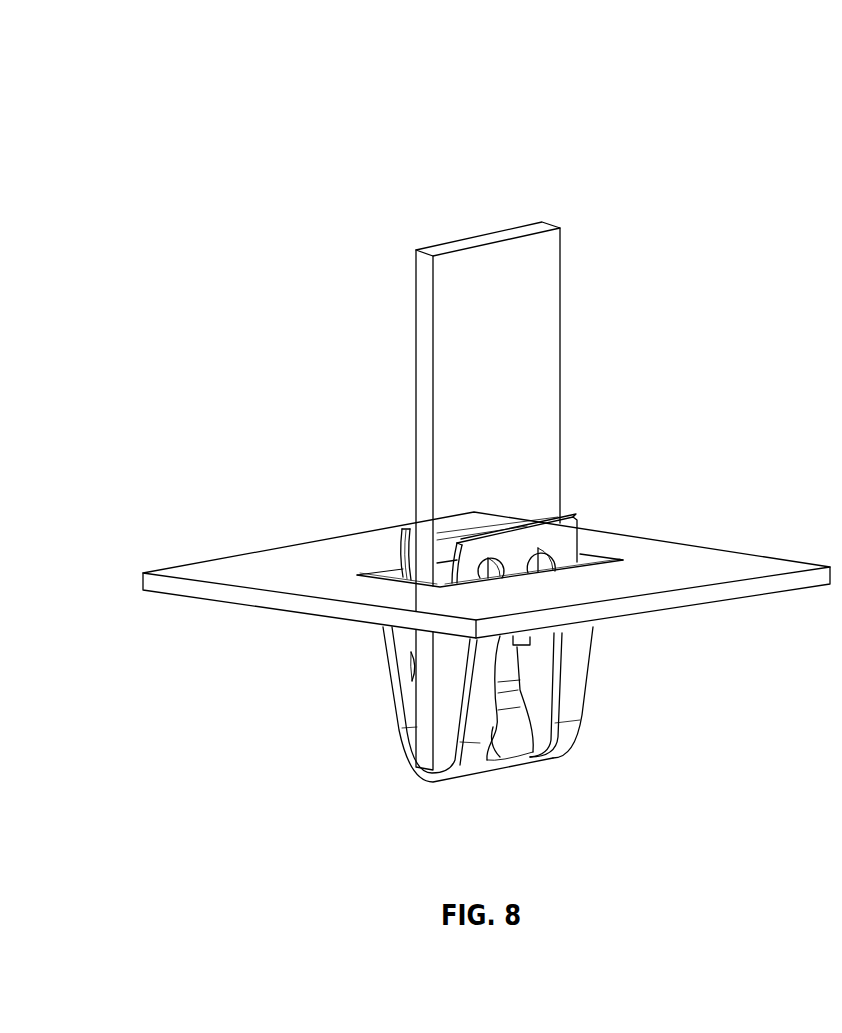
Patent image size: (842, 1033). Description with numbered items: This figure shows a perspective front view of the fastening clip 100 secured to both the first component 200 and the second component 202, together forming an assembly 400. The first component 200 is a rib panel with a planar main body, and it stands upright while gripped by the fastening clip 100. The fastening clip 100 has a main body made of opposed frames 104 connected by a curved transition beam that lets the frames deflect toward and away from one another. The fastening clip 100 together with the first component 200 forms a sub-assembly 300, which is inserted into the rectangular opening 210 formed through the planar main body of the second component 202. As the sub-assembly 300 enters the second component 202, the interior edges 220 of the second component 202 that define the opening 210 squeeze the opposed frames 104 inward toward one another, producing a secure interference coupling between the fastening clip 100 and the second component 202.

The fastening clip 100 is at (499, 622).
The opposed frames 104 is at (393, 677).
The first component 200 is at (551, 336).
The second component 202 is at (732, 560).
The rectangular opening 210 is at (392, 562).
The interior edges 220 is at (580, 563).
The sub-assembly 300 is at (573, 468).
The assembly 400 is at (720, 303).